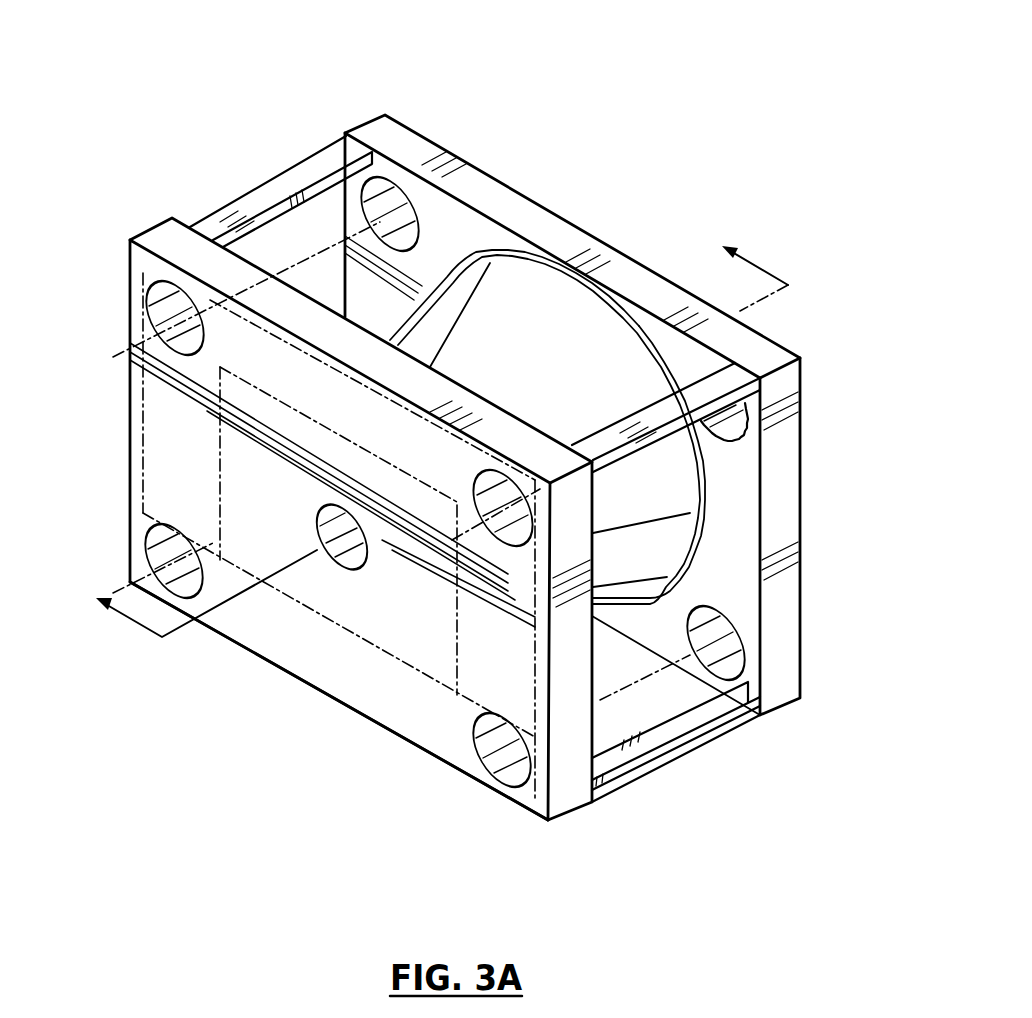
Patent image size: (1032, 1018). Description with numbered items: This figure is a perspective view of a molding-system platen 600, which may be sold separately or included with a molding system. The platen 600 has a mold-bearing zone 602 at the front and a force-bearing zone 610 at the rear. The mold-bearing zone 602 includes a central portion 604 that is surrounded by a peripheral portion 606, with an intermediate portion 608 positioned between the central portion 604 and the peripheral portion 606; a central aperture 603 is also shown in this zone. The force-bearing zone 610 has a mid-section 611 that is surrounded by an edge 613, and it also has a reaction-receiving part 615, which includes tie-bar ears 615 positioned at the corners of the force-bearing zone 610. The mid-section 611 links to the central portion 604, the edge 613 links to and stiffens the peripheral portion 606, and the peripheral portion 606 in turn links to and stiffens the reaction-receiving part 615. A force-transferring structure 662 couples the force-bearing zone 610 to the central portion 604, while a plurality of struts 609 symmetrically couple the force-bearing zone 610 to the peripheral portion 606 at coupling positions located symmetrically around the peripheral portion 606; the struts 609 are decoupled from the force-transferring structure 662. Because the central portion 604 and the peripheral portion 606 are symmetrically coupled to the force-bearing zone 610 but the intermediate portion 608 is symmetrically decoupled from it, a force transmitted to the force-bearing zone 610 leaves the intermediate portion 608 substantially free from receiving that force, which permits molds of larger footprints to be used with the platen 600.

The molding-system platen 600 is at (714, 136).
The mold-bearing zone 602 is at (308, 686).
The central aperture 603 is at (321, 556).
The central portion 604 is at (401, 647).
The peripheral portion 606 is at (435, 755).
The intermediate portion 608 is at (414, 706).
The struts 609 is at (285, 190).
The force-bearing zone 610 is at (802, 668).
The mid-section 611 is at (626, 236).
The edge 613 is at (466, 222).
The reaction-receiving part 615 is at (395, 182).
The force-transferring structure 662 is at (623, 590).